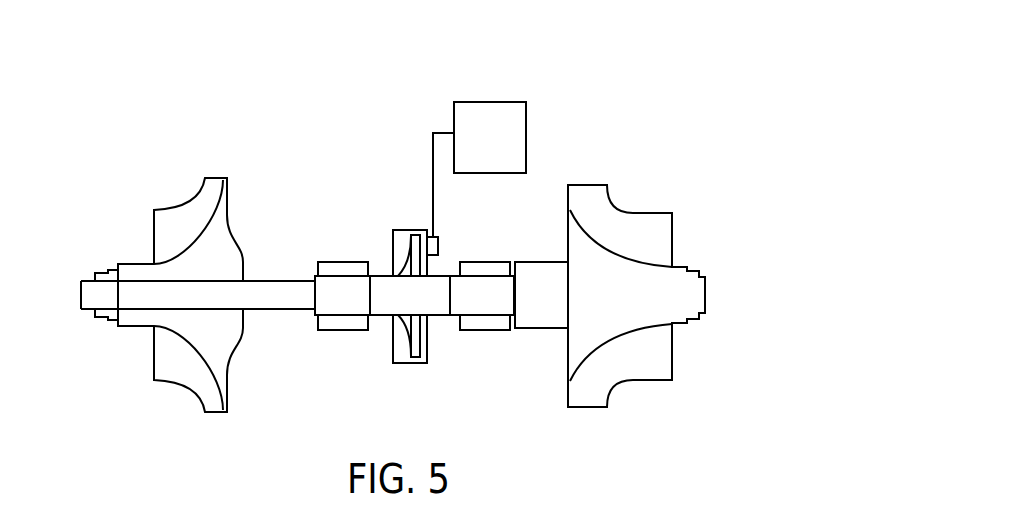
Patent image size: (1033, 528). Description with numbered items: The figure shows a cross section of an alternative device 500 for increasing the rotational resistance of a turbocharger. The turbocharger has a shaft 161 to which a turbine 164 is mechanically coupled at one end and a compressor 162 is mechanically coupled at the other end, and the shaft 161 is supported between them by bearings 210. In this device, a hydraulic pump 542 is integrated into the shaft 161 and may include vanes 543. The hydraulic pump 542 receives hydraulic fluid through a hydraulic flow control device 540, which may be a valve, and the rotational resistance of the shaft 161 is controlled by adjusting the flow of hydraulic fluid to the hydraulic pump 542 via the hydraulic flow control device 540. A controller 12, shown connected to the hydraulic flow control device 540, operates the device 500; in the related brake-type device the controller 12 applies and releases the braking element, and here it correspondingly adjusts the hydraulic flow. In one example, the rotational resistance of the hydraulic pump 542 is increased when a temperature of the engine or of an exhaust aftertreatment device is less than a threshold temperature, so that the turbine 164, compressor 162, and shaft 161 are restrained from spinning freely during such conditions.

The device for increasing rotational resistance of a turbocharger 500 is at (680, 90).
The controller 12 is at (503, 149).
The shaft 161 is at (262, 310).
The compressor 162 is at (217, 412).
The turbine 164 is at (588, 407).
The bearings 210 is at (340, 260).
The hydraulic flow control device 540 is at (435, 237).
The hydraulic pump 542 is at (413, 363).
The vanes 543 is at (403, 260).